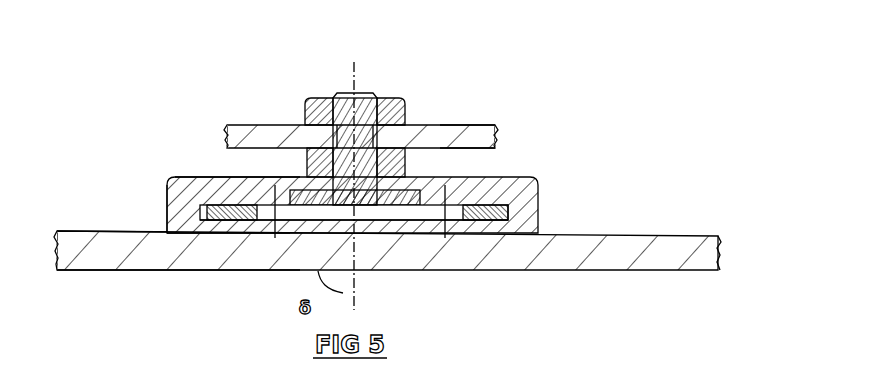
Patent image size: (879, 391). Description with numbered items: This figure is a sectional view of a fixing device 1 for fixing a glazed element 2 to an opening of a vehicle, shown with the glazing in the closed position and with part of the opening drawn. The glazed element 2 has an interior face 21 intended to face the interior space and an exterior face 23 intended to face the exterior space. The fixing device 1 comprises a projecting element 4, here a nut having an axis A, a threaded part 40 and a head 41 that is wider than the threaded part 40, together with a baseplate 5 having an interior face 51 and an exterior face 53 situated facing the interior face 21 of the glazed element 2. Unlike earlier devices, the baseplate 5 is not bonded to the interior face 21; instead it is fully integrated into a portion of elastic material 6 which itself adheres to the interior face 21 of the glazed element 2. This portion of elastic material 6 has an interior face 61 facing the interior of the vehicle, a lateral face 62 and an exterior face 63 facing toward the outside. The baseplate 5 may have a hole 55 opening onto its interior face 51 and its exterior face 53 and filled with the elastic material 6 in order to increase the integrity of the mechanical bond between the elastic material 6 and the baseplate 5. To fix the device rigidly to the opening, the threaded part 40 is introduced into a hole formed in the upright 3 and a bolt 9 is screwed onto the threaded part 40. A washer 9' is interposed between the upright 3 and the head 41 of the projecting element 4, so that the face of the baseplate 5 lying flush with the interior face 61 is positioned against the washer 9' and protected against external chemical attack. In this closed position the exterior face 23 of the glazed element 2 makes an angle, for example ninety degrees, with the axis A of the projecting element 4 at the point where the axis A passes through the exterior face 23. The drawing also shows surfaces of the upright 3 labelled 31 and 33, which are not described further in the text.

The fixing device 1 is at (97, 68).
The glazed element 2 is at (609, 267).
The upright 3 is at (227, 130).
The projecting element 4 is at (340, 137).
The baseplate 5 is at (252, 232).
The portion of elastic material 6 is at (538, 191).
The bolt 9 is at (343, 124).
The washer 9' is at (411, 162).
The interior face 21 is at (127, 230).
The exterior face 23 is at (130, 271).
The upper face of plate 31 is at (468, 125).
The lower face of plate 33 is at (470, 148).
The threaded part 40 is at (317, 133).
The head 41 is at (412, 222).
The interior face 51 is at (507, 198).
The exterior face 53 is at (492, 222).
The hole 55 is at (275, 213).
The interior face 61 is at (187, 176).
The lateral face 62 is at (167, 205).
The exterior face 63 is at (165, 271).
The axis A is at (425, 97).